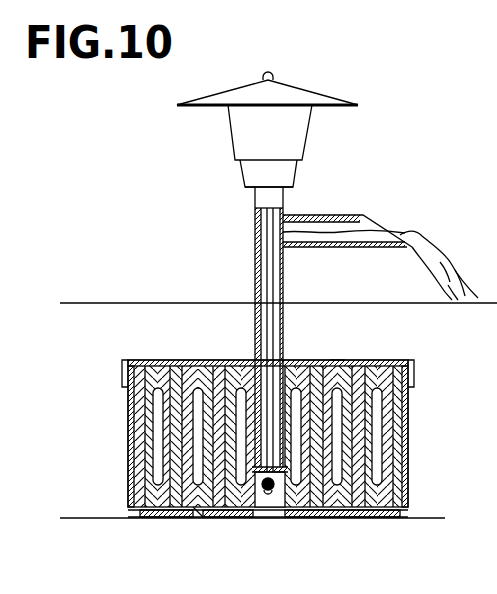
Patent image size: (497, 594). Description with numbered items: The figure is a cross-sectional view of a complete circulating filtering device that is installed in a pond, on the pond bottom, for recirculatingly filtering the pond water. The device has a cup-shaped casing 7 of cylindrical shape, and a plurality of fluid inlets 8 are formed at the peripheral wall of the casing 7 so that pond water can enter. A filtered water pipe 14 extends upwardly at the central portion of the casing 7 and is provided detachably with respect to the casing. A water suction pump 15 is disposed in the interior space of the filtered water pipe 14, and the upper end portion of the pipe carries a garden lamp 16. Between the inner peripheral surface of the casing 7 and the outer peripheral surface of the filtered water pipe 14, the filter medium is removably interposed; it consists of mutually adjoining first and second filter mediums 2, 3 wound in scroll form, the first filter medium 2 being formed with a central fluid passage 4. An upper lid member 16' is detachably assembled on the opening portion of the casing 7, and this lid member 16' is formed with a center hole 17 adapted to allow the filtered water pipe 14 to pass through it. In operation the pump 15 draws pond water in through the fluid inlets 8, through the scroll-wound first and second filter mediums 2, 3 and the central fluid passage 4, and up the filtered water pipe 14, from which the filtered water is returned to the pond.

The first filter medium 2 is at (167, 508).
The second filter medium 3 is at (180, 510).
The central fluid passage 4 is at (158, 407).
The casing 7 is at (413, 398).
The fluid inlets 8 is at (132, 448).
The filtered water pipe 14 is at (258, 262).
The water suction pump 15 is at (280, 503).
The garden lamp 16 is at (290, 122).
The upper lid member 16' is at (352, 337).
The center hole 17 is at (287, 360).